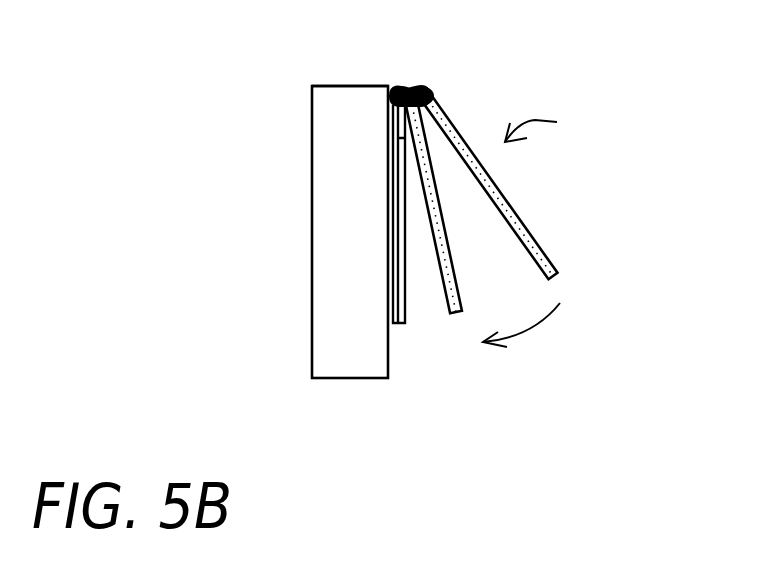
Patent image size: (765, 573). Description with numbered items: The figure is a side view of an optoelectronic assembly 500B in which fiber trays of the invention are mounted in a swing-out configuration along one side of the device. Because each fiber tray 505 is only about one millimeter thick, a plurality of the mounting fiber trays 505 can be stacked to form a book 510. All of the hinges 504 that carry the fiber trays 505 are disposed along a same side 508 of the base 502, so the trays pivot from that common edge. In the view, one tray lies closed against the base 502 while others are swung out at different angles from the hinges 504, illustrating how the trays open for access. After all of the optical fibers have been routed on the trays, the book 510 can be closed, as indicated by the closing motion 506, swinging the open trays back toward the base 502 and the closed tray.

The optoelectronic assembly 500B is at (257, 65).
The base 502 is at (327, 288).
The hinges 504 is at (410, 84).
The fiber tray 505 is at (534, 243).
The closing indication 506 is at (526, 336).
The same side 508 is at (338, 86).
The book 510 is at (557, 123).